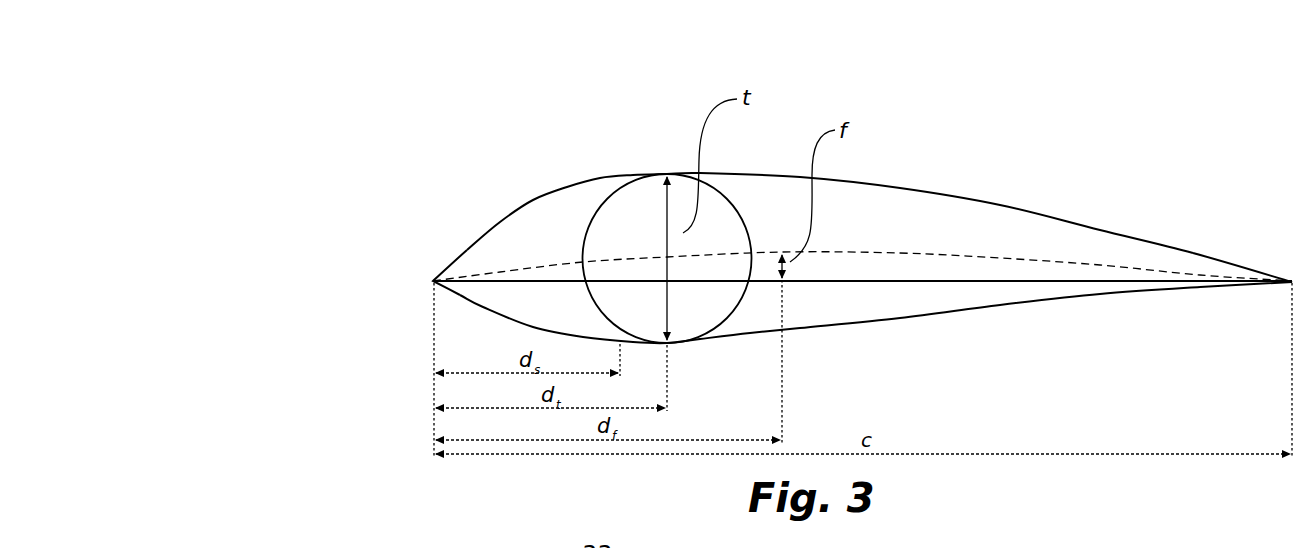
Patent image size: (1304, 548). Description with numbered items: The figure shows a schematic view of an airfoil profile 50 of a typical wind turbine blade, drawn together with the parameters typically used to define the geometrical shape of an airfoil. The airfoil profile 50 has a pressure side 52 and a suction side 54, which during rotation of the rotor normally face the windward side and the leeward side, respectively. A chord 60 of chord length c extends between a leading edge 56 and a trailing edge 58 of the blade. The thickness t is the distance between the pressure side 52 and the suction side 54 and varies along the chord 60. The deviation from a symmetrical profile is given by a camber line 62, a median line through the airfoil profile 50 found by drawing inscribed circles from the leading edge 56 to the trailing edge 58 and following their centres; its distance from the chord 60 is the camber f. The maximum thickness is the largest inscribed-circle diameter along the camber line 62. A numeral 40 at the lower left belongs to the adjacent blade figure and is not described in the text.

The airfoil 50 is at (838, 88).
The lower surface (pressure side) 52 is at (1030, 303).
The upper surface (suction side) 54 is at (968, 195).
The leading edge 56 is at (433, 281).
The trailing edge 58 is at (1291, 281).
The chord line 60 is at (1073, 281).
The camber line 62 is at (852, 252).
The rotor blade 40 is at (280, 547).